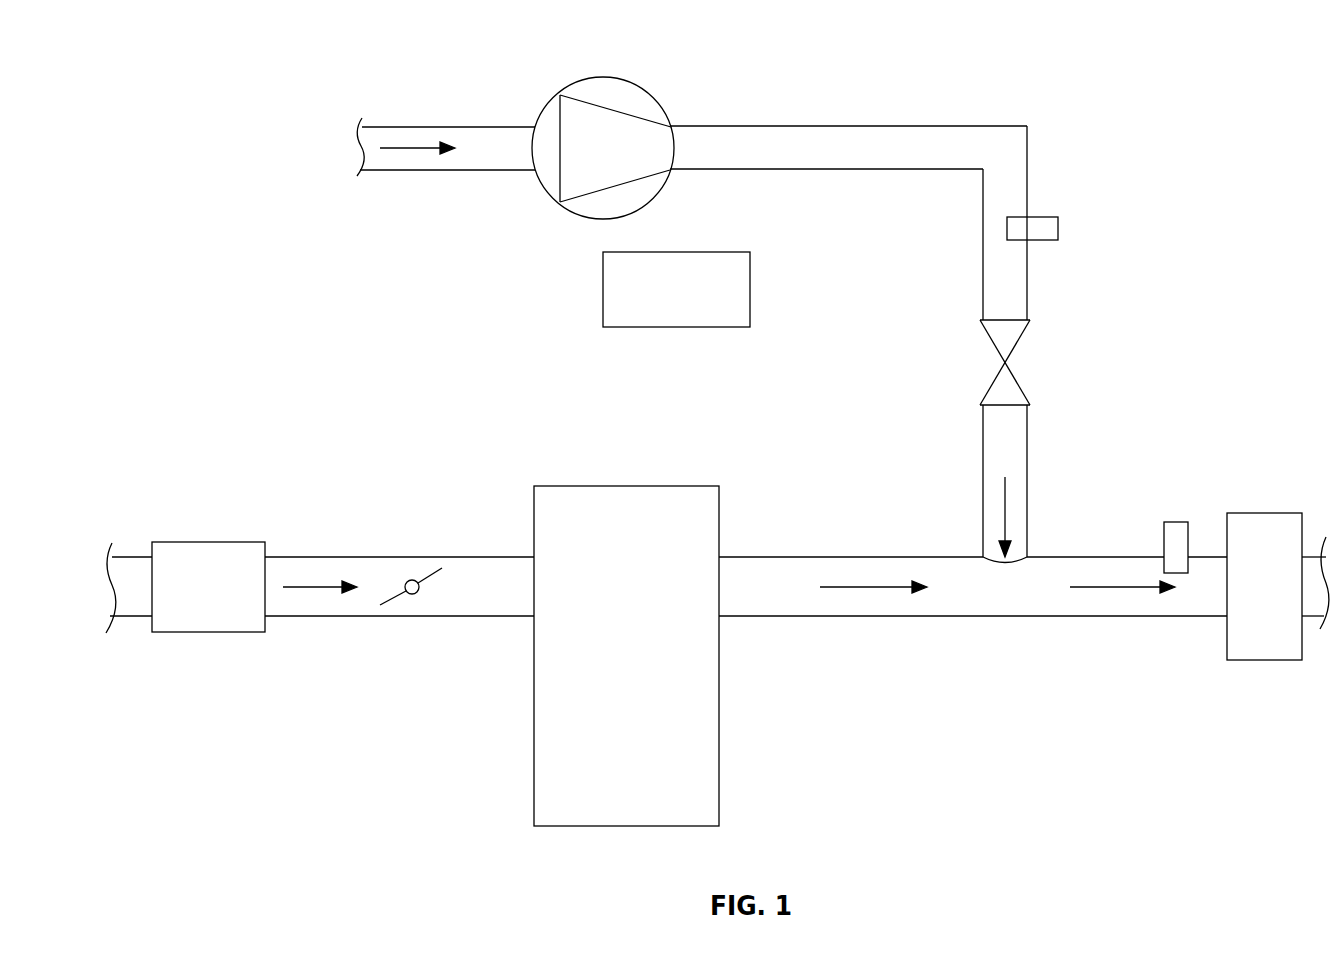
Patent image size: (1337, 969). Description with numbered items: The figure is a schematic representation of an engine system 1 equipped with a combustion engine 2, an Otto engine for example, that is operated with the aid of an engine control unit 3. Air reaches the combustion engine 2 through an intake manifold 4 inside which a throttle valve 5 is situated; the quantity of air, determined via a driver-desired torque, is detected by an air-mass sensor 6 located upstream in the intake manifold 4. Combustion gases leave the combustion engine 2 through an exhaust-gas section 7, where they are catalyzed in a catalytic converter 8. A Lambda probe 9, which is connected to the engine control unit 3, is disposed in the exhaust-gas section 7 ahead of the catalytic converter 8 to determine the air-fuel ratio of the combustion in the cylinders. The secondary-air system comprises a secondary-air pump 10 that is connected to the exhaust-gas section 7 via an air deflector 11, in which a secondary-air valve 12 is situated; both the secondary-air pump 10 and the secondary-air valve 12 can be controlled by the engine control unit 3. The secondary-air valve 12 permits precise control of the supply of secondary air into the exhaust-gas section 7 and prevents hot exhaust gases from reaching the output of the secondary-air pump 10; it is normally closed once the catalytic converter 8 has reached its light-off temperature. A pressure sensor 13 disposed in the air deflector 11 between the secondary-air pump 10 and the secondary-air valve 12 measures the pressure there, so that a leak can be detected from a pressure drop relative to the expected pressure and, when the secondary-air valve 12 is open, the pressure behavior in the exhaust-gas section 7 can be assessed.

The engine system 1 is at (1073, 149).
The combustion engine 2 is at (581, 493).
The engine control unit 3 is at (740, 292).
The intake manifold 4 is at (478, 575).
The throttle valve 5 is at (398, 595).
The air-mass sensor 6 is at (220, 548).
The exhaust-gas section 7 is at (1043, 605).
The catalytic converter 8 is at (1268, 645).
The Lambda probe 9 is at (1175, 532).
The secondary-air pump 10 is at (608, 88).
The air deflector 11 is at (897, 138).
The secondary-air valve 12 is at (1008, 388).
The pressure sensor 13 is at (1043, 229).